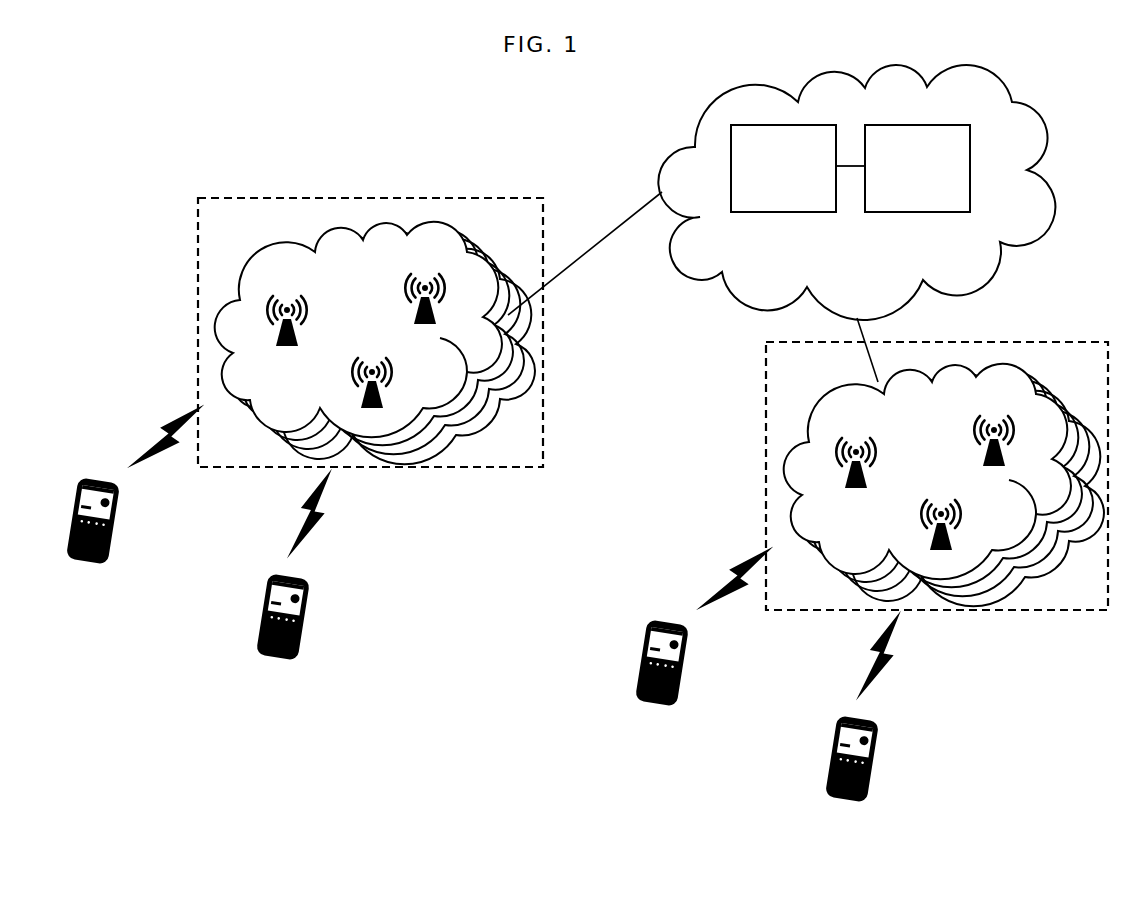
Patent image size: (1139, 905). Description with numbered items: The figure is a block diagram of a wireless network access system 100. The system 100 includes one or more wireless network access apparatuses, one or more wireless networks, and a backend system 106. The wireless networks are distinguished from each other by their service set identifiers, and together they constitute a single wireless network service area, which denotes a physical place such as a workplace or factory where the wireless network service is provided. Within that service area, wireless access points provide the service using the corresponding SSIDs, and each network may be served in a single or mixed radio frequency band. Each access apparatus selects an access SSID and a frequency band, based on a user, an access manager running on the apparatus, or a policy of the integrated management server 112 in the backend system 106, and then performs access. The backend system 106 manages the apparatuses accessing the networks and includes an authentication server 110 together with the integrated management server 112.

The wireless network access system 100 is at (108, 86).
The backend system 106 is at (700, 117).
The authentication server 110 is at (902, 213).
The integrated management server 112 is at (771, 213).